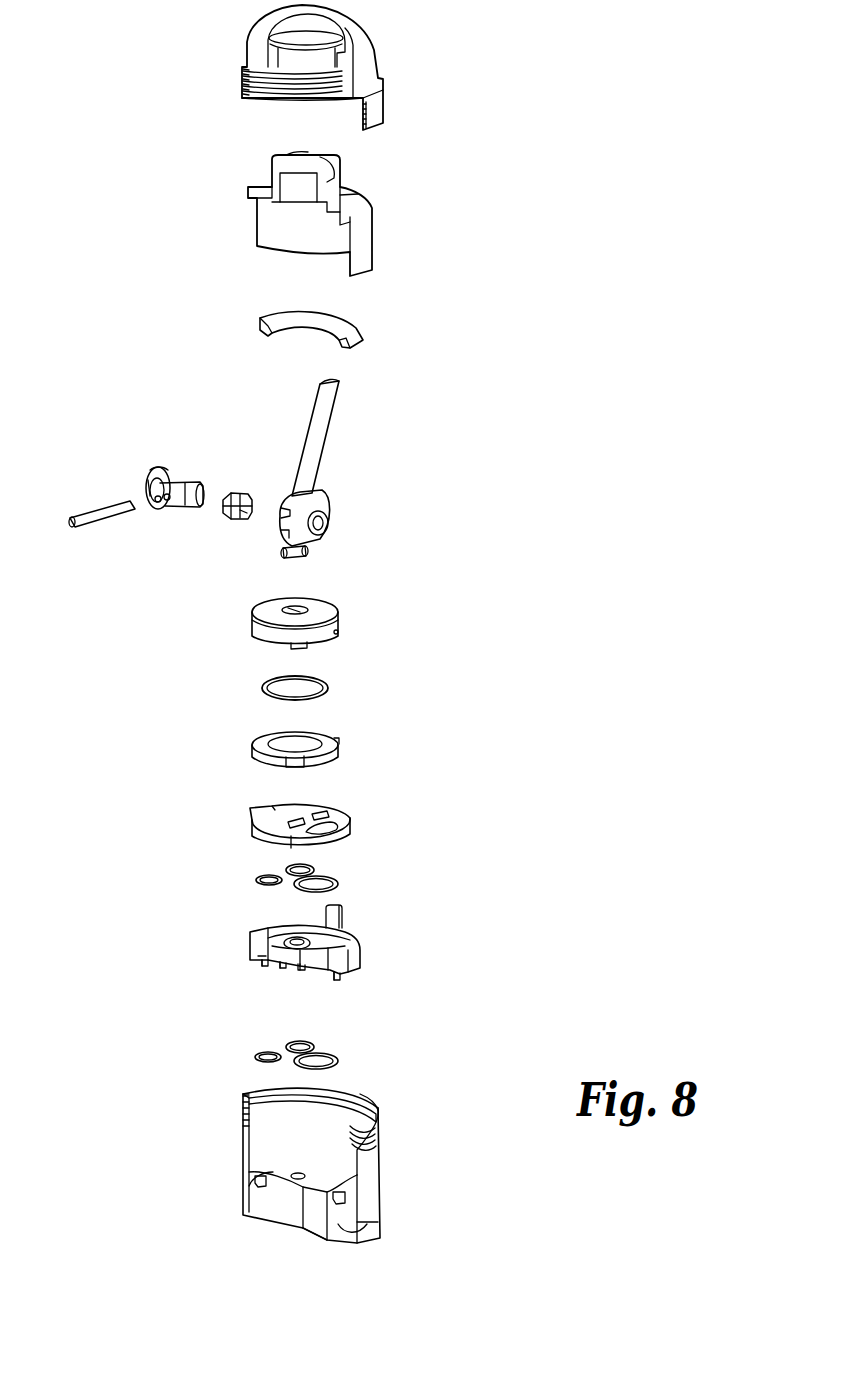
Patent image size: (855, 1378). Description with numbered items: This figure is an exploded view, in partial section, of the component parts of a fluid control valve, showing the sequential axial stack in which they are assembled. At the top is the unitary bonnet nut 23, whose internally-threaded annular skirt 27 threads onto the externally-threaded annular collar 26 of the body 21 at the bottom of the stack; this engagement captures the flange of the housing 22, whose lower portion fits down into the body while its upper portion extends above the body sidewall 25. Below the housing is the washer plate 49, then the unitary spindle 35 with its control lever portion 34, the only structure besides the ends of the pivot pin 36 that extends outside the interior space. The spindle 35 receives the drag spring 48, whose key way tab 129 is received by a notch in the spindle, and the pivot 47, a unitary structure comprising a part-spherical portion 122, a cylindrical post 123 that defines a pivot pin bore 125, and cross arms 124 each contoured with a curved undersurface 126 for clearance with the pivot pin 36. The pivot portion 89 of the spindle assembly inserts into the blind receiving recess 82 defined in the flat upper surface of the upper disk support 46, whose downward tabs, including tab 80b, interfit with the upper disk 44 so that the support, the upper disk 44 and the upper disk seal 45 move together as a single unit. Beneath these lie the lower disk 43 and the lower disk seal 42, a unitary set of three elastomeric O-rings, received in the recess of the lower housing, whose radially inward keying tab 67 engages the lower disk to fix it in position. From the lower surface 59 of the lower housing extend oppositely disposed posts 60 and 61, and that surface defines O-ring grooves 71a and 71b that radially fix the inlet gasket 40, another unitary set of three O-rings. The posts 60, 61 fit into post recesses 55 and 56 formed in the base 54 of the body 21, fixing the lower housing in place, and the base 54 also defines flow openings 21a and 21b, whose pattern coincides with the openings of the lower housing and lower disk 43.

The bonnet nut 23 is at (372, 50).
The internally-threaded annular skirt 27 is at (268, 98).
The housing 22 is at (373, 240).
The washer plate 49 is at (352, 330).
The control lever portion 34 is at (326, 421).
The spindle 35 is at (318, 500).
The pivot portion 89 is at (305, 560).
The pivot pin 36 is at (85, 519).
The pivot 47 is at (181, 482).
The part-spherical portion 122 is at (165, 474).
The cross arms 124 is at (150, 481).
The cylindrical post 123 is at (193, 484).
The curved undersurface 126 is at (158, 504).
The pivot pin bore 125 is at (168, 503).
The drag spring 48 is at (240, 495).
The key way tab 129 is at (247, 520).
The upper disk support 46 is at (338, 614).
The blind receiving recess 82 is at (292, 606).
The tab 80b is at (303, 648).
The upper disk seal 45 is at (262, 688).
The upper disk 44 is at (330, 758).
The lower disk 43 is at (352, 830).
The lower disk seal 42 is at (340, 882).
The keying tab 67 is at (256, 930).
The post 61 is at (262, 960).
The lower surface 59 is at (268, 965).
The O-ring groove 71b is at (283, 966).
The O-ring groove 71a is at (300, 970).
The post 60 is at (340, 980).
The inlet gasket 40 is at (256, 1056).
The body 21 is at (383, 1150).
The externally-threaded annular collar 26 is at (370, 1094).
The body sidewall 25 is at (242, 1130).
The flow opening 21b is at (298, 1172).
The post recess 56 is at (261, 1176).
The post recess 55 is at (346, 1195).
The base 54 is at (360, 1226).
The flow opening 21a is at (317, 1210).